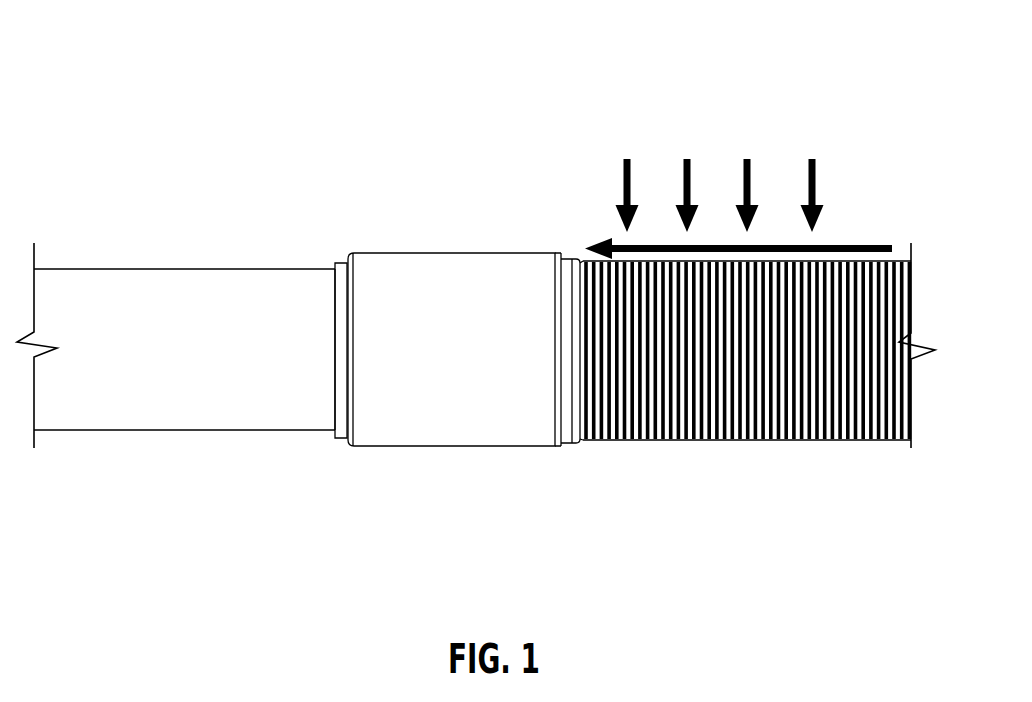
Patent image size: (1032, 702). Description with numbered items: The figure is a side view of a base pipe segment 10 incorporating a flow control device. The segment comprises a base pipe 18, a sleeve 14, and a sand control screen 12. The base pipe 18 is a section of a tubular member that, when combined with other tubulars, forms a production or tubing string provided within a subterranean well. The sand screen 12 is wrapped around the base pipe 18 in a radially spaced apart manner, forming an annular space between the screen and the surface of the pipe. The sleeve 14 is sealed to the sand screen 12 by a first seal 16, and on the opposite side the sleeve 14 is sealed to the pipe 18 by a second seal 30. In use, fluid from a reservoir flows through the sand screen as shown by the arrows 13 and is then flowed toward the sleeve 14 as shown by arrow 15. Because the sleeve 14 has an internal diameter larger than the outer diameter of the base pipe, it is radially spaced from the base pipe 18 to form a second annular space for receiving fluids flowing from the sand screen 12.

The base pipe segment 10 is at (483, 93).
The sand control screen 12 is at (735, 440).
The arrows 13 is at (634, 176).
The sleeve 14 is at (445, 423).
The arrow 15 is at (870, 242).
The first seal 16 is at (579, 443).
The base pipe 18 is at (190, 415).
The second seal 30 is at (342, 262).